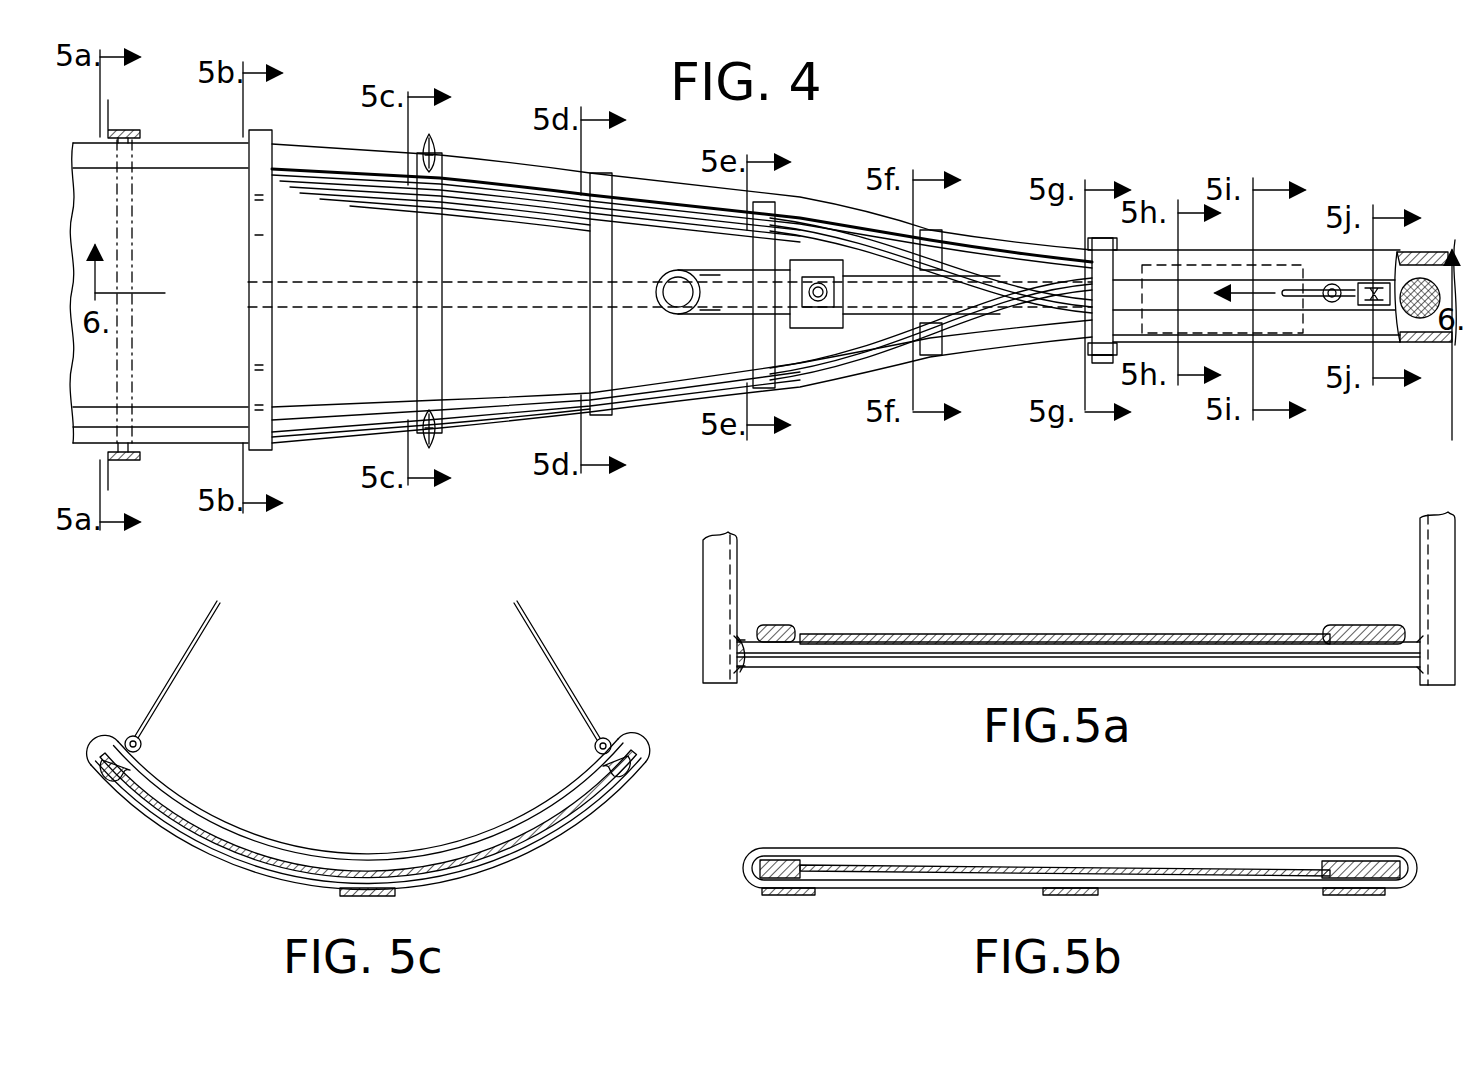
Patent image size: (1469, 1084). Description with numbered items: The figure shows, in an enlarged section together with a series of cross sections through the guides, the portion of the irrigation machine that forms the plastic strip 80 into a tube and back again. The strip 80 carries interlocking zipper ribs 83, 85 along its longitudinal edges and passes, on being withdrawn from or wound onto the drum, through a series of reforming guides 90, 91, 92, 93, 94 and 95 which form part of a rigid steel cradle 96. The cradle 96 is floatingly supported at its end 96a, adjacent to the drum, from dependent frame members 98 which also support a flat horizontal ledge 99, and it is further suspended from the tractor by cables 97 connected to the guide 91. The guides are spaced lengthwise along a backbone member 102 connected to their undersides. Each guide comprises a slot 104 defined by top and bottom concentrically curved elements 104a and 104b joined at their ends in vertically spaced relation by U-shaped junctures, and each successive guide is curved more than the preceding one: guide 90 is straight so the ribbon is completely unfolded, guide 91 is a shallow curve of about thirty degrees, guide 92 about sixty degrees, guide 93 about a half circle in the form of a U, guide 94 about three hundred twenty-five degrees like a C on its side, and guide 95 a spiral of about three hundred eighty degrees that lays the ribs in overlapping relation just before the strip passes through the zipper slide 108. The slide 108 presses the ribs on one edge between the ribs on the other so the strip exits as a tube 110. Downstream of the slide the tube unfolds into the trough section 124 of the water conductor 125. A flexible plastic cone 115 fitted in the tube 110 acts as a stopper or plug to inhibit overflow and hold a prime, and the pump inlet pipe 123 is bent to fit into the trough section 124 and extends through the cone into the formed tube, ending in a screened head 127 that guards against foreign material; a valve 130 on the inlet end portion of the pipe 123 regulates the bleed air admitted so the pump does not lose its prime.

In FIG. 4, the plastic strip 80 is at (339, 370).
In FIG. 5A, the plastic strip 80 is at (1110, 638).
In FIG. 5B, the plastic strip 80 is at (1045, 866).
In FIG. 5C, the plastic strip 80 is at (465, 876).
In FIG. 4, the interlocking zipper rib 83 is at (200, 152).
In FIG. 5A, the interlocking zipper rib 83 is at (777, 626).
In FIG. 5B, the interlocking zipper rib 83 is at (776, 865).
In FIG. 5C, the interlocking zipper rib 83 is at (105, 763).
In FIG. 4, the interlocking zipper rib 85 is at (203, 430).
In FIG. 5A, the interlocking zipper rib 85 is at (1390, 626).
In FIG. 5B, the interlocking zipper rib 85 is at (1380, 862).
In FIG. 5C, the interlocking zipper rib 85 is at (648, 766).
In FIG. 4, the reforming guide 90 is at (262, 215).
In FIG. 5B, the reforming guide 90 is at (1235, 848).
In FIG. 4, the reforming guide 91 is at (434, 345).
In FIG. 5C, the reforming guide 91 is at (628, 757).
In FIG. 4, the reforming guide 92 is at (605, 360).
In FIG. 4, the reforming guide 93 is at (780, 353).
In FIG. 4, the reforming guide 94 is at (932, 342).
In FIG. 4, the reforming guide 95 is at (1100, 358).
In FIG. 4, the steel cradle 96 is at (1012, 243).
In FIG. 5B, the steel cradle 96 is at (790, 896).
In FIG. 5C, the steel cradle 96 is at (345, 896).
In FIG. 5A, the cradle support end 96a is at (782, 662).
In FIG. 4, the cable 97 is at (433, 142).
In FIG. 5C, the cable 97 is at (185, 665).
In FIG. 4, the dependent frame member 98 is at (138, 118).
In FIG. 5A, the dependent frame member 98 is at (720, 556).
In FIG. 4, the ledge 99 is at (130, 326).
In FIG. 5A, the ledge 99 is at (870, 636).
In FIG. 5B, the backbone member 102 is at (1048, 892).
In FIG. 5C, the backbone member 102 is at (395, 896).
In FIG. 5B, the slot 104 is at (910, 860).
In FIG. 5C, the slot 104 is at (472, 853).
In FIG. 5C, the top curved element 104a is at (360, 857).
In FIG. 5C, the bottom curved element 104b is at (248, 868).
In FIG. 4, the zipper slide 108 is at (1337, 304).
In FIG. 4, the tube 110 is at (1291, 331).
In FIG. 4, the cone 115 is at (1275, 262).
In FIG. 4, the inlet pipe 123 is at (690, 272).
In FIG. 4, the trough section 124 is at (490, 261).
In FIG. 4, the water conductor 125 is at (1433, 250).
In FIG. 4, the screened head 127 is at (1415, 320).
In FIG. 4, the valve 130 is at (818, 283).